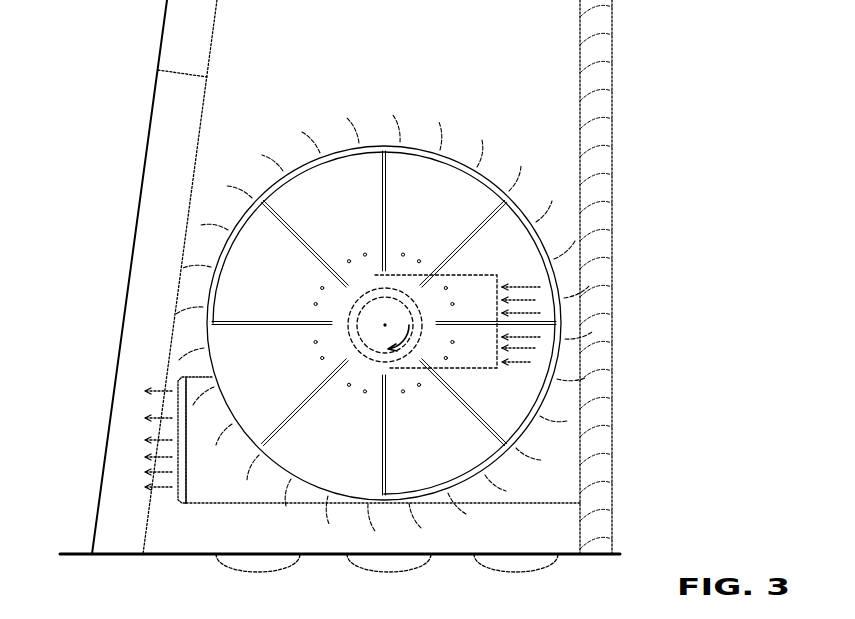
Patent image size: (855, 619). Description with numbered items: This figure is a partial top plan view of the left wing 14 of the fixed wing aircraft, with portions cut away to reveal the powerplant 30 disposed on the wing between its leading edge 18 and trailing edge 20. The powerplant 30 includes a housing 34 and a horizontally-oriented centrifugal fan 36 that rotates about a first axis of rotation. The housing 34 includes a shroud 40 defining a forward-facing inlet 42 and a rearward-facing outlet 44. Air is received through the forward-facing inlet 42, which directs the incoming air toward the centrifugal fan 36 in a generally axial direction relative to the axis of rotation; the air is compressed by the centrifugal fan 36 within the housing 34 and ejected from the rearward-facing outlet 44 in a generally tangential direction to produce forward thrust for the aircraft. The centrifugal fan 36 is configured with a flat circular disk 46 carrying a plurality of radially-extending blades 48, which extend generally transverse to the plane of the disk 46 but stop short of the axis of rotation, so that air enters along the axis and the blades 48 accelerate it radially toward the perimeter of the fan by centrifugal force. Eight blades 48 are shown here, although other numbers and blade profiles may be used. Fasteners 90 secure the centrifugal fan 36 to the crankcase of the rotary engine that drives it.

The left wing 14 is at (602, 402).
The leading edge 18 is at (612, 255).
The trailing edge 20 is at (100, 483).
The powerplant 30 is at (555, 243).
The housing 34 is at (300, 163).
The centrifugal fan 36 is at (373, 150).
The shroud 40 is at (302, 492).
The forward-facing inlet 42 is at (493, 302).
The rearward-facing outlet 44 is at (220, 463).
The flat circular disk 46 is at (488, 190).
The radially-extending blades 48 is at (303, 245).
The fasteners 90 is at (402, 257).